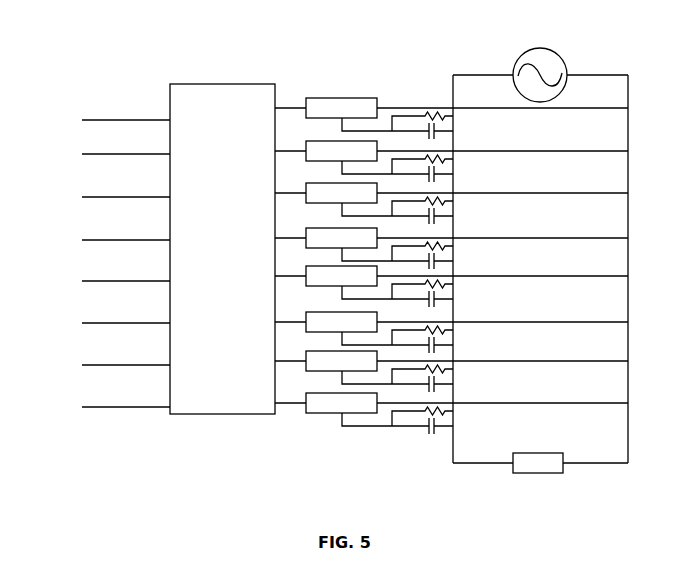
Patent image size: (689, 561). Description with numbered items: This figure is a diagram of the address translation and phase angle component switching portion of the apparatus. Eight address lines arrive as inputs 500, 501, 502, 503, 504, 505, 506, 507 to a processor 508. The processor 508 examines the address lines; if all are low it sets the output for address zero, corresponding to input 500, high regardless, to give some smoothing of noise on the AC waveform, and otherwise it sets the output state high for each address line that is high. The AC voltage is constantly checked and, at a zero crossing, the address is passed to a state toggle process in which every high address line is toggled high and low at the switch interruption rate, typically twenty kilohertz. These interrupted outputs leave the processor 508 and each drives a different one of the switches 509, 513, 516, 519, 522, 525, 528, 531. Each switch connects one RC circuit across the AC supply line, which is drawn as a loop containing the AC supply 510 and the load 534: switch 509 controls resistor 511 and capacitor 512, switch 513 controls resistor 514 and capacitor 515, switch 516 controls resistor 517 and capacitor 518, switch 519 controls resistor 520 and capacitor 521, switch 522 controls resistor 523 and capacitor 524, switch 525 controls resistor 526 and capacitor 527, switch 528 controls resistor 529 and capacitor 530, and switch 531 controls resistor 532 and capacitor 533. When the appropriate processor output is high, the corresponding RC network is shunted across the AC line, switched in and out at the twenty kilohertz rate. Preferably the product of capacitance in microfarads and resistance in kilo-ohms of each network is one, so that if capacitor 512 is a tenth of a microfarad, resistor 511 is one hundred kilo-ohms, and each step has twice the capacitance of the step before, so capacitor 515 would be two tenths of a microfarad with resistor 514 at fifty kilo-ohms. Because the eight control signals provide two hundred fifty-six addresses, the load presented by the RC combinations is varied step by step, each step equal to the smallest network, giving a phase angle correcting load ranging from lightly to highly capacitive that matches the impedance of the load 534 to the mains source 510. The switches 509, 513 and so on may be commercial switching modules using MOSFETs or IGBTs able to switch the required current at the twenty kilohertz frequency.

The input 500 is at (85, 120).
The input 501 is at (84, 154).
The input 502 is at (90, 197).
The input 503 is at (88, 240).
The input 504 is at (92, 281).
The input 505 is at (95, 323).
The input 506 is at (88, 365).
The input 507 is at (88, 407).
The processor 508 is at (258, 80).
The switch 509 is at (342, 97).
The AC power source 510 is at (512, 61).
The resistor 511 is at (455, 115).
The capacitor 512 is at (455, 130).
The switch 513 is at (318, 142).
The resistor 514 is at (468, 164).
The capacitor 515 is at (455, 176).
The switch 516 is at (318, 184).
The resistor 517 is at (455, 204).
The capacitor 518 is at (455, 218).
The switch 519 is at (320, 228).
The resistor 520 is at (455, 246).
The capacitor 521 is at (455, 262).
The switch 522 is at (320, 268).
The resistor 523 is at (455, 287).
The capacitor 524 is at (455, 302).
The switch 525 is at (317, 313).
The resistor 526 is at (455, 331).
The capacitor 527 is at (455, 345).
The switch 528 is at (322, 352).
The resistor 529 is at (455, 372).
The capacitor 530 is at (455, 387).
The switch 531 is at (322, 394).
The resistor 532 is at (455, 414).
The capacitor 533 is at (425, 437).
The load 534 is at (530, 480).